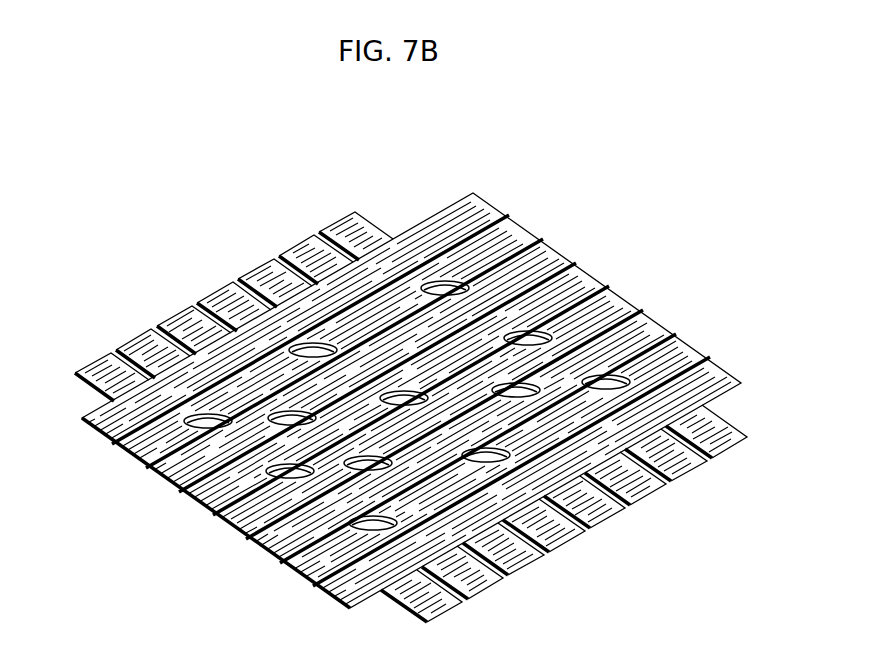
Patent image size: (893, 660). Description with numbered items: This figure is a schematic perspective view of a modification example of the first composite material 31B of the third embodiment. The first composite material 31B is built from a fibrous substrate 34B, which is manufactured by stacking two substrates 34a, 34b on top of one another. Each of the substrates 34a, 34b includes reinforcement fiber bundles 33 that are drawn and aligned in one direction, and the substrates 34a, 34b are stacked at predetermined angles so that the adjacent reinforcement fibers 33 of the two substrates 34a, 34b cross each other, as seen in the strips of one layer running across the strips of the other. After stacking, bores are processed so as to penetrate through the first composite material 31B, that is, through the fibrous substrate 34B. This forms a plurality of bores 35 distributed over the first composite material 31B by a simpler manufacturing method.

The first composite material 31B is at (649, 200).
The reinforcement fiber bundles 33 is at (88, 352).
The substrate 34a is at (318, 586).
The substrate 34b is at (630, 480).
The fibrous substrate 34B is at (407, 232).
The bores 35 is at (176, 409).